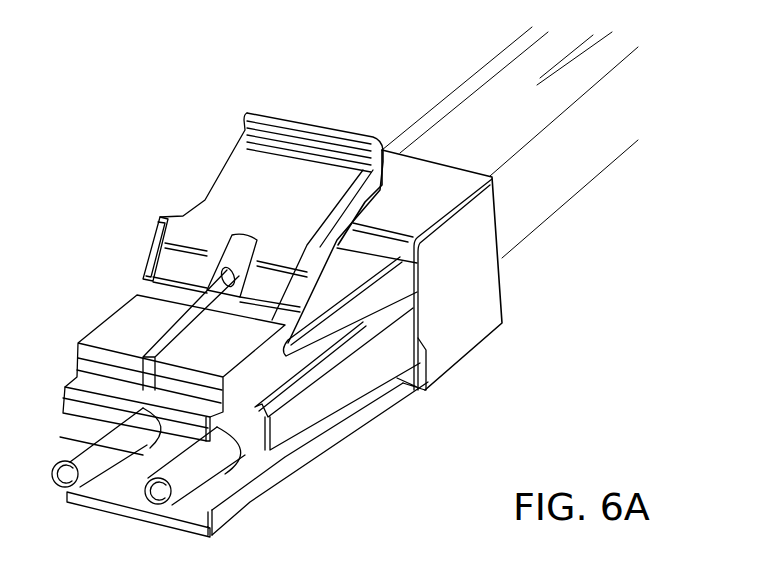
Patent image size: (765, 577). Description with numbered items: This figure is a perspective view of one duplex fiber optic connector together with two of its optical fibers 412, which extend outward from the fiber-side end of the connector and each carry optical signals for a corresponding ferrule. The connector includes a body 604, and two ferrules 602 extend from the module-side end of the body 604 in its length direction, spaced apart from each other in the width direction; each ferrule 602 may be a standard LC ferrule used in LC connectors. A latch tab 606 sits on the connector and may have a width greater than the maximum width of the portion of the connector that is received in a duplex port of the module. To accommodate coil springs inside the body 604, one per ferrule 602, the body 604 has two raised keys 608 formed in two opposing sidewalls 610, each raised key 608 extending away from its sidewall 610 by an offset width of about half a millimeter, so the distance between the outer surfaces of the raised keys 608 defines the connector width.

The optical fibers 412 is at (547, 47).
The ferrules 602 is at (65, 479).
The body 604 is at (468, 293).
The latch tab 606 is at (218, 180).
The raised keys 608 is at (340, 380).
The opposing sidewalls 610 is at (268, 372).